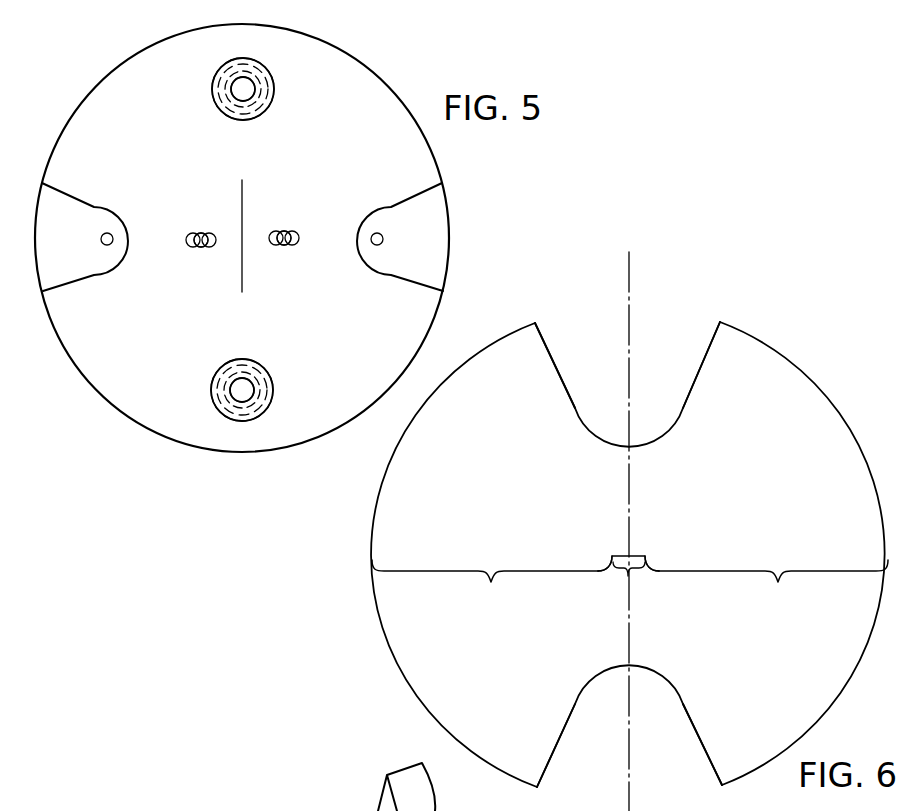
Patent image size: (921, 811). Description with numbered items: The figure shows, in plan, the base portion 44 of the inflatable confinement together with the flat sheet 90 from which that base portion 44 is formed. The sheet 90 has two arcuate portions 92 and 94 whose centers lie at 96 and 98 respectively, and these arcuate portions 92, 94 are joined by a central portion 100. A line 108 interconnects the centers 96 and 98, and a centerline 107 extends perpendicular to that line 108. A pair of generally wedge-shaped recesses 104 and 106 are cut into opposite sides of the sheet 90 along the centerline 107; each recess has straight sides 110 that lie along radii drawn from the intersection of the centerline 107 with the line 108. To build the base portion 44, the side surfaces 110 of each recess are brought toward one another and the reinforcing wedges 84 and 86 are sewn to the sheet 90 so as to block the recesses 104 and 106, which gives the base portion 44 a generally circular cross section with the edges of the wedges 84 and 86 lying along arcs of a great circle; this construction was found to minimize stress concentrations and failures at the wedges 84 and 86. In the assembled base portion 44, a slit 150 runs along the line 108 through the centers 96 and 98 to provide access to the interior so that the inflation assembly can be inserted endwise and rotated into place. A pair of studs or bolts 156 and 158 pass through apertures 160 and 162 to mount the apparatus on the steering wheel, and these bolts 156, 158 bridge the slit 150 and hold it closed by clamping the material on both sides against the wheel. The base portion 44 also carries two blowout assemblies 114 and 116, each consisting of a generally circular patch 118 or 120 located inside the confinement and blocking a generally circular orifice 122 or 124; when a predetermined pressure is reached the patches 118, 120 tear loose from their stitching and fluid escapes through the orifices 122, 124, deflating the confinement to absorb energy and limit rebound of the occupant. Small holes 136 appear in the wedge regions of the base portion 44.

In FIG. 5, the base portion 44 is at (398, 83).
In FIG. 5, the reinforcing wedge 84 is at (78, 201).
In FIG. 5, the reinforcing wedge 86 is at (444, 240).
In FIG. 5, the hole 136 is at (102, 245).
In FIG. 5, the slit 150 is at (244, 207).
In FIG. 5, the bolt 156 is at (202, 233).
In FIG. 5, the bolt 158 is at (288, 232).
In FIG. 5, the aperture 160 is at (203, 248).
In FIG. 5, the aperture 162 is at (288, 246).
In FIG. 5, the blowout assembly 116 is at (278, 87).
In FIG. 5, the blowout patch 120 is at (233, 98).
In FIG. 5, the orifice 124 is at (213, 71).
In FIG. 5, the blowout assembly 114 is at (280, 388).
In FIG. 5, the blowout patch 118 is at (237, 388).
In FIG. 5, the orifice 122 is at (276, 363).
In FIG. 6, the sheet 90 is at (372, 612).
In FIG. 6, the arcuate portion 92 is at (773, 584).
In FIG. 6, the arcuate portion 94 is at (485, 585).
In FIG. 6, the center 96 is at (613, 556).
In FIG. 6, the center 98 is at (650, 553).
In FIG. 6, the central portion 100 is at (629, 581).
In FIG. 6, the recess 104 is at (644, 753).
In FIG. 6, the recess 106 is at (647, 407).
In FIG. 6, the centerline 107 is at (640, 478).
In FIG. 6, the line 108 is at (638, 553).
In FIG. 6, the straight side 110 is at (555, 366).